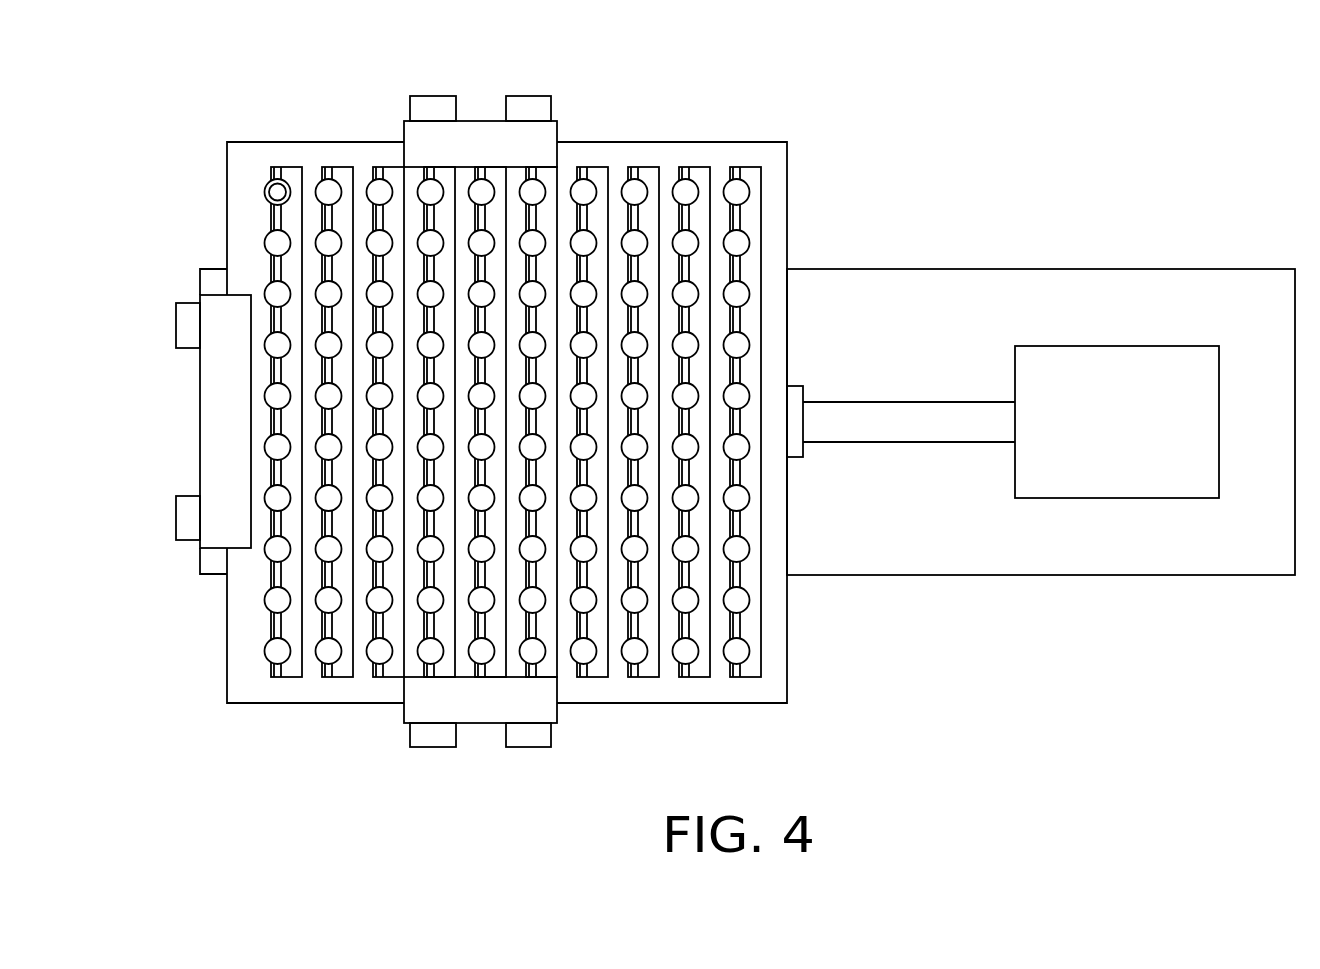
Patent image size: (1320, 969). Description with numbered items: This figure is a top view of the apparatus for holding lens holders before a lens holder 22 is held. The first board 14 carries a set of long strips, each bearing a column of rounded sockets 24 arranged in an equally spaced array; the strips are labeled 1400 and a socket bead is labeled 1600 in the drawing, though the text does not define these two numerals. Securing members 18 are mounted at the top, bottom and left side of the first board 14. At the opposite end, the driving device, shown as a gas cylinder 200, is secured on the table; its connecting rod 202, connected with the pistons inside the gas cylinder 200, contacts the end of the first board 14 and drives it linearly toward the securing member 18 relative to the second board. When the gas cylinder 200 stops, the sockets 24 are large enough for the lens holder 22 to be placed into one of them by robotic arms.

The first board 14 is at (705, 150).
The securing member 18 is at (477, 130).
The lens holder 22 is at (277, 192).
The socket 24 is at (737, 190).
The gas cylinder 200 is at (1148, 400).
The connecting rod 202 is at (912, 420).
The strip 1400 is at (725, 657).
The bead 1600 is at (749, 651).